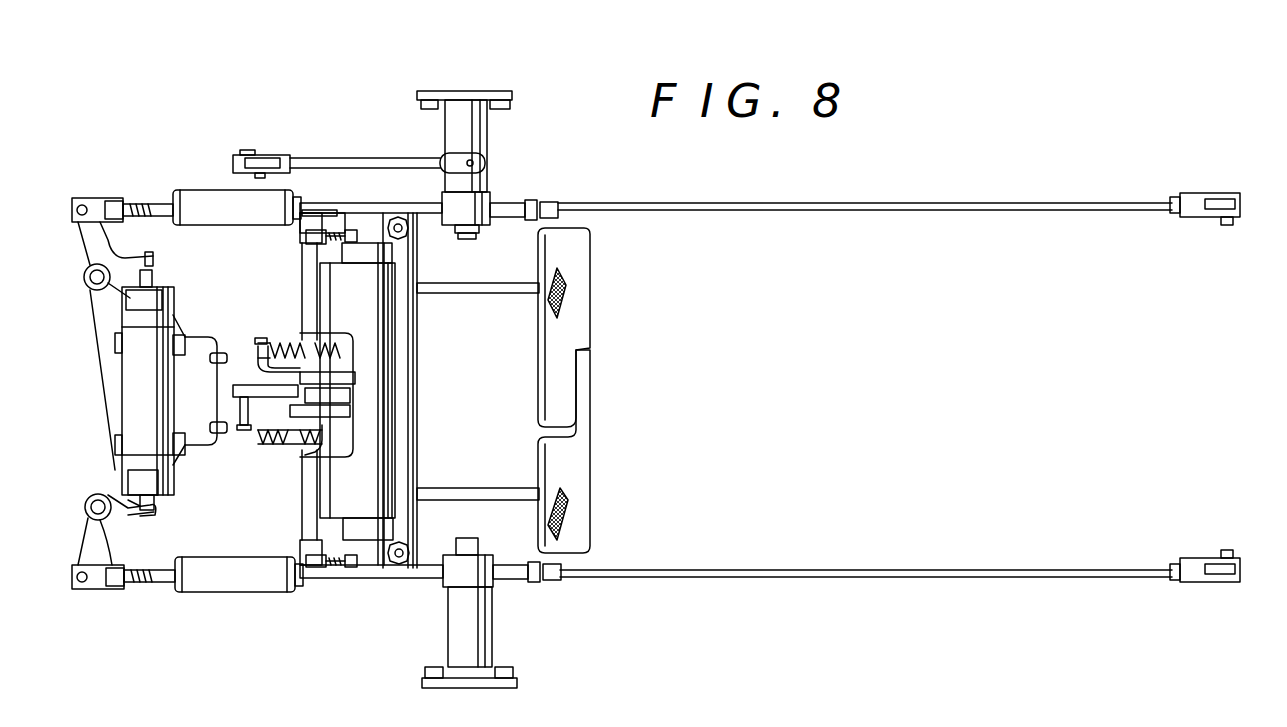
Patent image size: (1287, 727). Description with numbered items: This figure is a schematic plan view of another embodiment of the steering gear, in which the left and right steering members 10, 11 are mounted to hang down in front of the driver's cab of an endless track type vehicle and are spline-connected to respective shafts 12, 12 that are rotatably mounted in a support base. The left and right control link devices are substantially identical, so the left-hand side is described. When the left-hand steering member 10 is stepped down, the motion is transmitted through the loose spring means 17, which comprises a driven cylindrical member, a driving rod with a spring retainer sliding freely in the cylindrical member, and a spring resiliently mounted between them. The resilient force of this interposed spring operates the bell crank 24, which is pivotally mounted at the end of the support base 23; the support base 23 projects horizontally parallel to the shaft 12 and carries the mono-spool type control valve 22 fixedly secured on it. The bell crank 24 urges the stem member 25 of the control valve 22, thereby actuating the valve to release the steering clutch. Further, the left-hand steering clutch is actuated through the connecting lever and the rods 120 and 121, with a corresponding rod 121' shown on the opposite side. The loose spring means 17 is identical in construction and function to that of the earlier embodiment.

The steering member 10 is at (583, 535).
The steering member 11 is at (583, 258).
The shaft 12 is at (372, 580).
The loose spring 17 is at (190, 203).
The control valve 22 is at (175, 462).
The support base 23 is at (118, 336).
The bell crank 24 is at (104, 556).
The stem member 25 is at (155, 510).
The rod 120 is at (427, 578).
The rod 121 is at (900, 581).
The connecting rod 121' is at (899, 195).